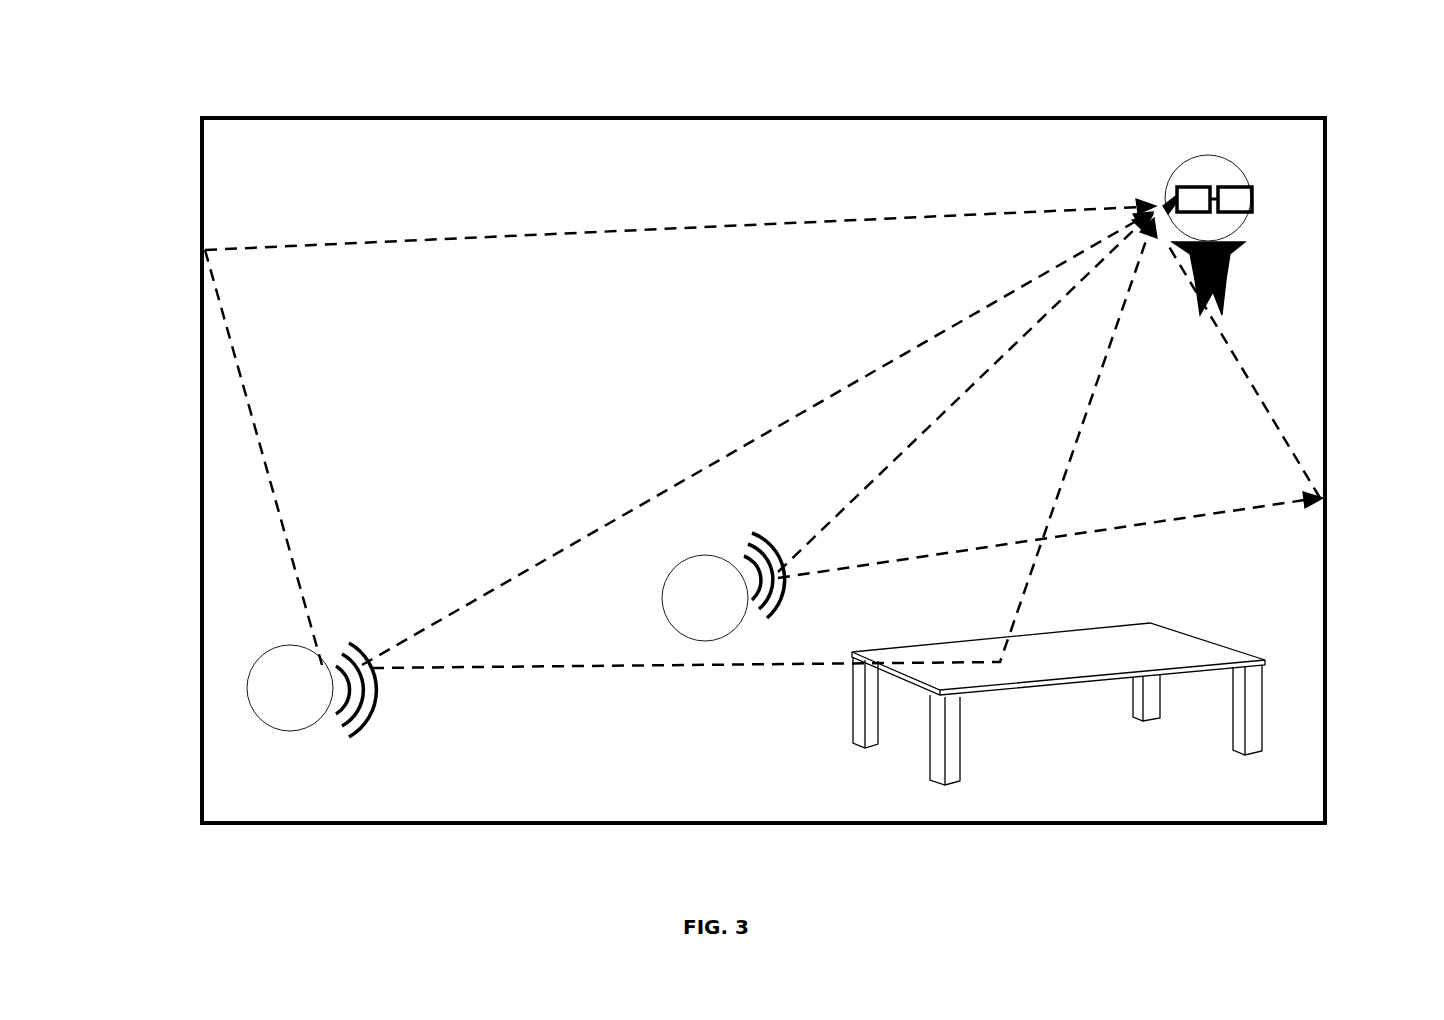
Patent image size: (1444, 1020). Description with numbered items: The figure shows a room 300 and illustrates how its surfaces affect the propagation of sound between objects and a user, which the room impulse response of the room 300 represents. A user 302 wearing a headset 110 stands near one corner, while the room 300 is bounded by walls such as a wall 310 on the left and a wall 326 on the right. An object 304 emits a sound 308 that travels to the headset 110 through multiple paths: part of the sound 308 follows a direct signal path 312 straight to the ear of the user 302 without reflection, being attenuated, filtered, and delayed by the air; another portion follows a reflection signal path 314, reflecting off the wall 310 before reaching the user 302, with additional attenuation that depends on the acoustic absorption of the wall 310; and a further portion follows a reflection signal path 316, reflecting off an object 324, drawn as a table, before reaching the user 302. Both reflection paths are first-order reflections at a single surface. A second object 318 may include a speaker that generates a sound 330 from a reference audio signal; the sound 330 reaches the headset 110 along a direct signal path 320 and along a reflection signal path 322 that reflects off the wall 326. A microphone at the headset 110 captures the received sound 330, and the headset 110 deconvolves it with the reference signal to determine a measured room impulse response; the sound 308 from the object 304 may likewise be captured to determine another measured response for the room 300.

The room 300 is at (763, 470).
The wall 310 is at (200, 235).
The wall 326 is at (1330, 705).
The reflection signal path 314 is at (680, 432).
The direct signal path 312 is at (757, 438).
The direct signal path 320 is at (953, 393).
The reflection signal path 316 is at (764, 443).
The reflection signal path 322 is at (1050, 411).
The headset 110 is at (1255, 195).
The user 302 is at (1228, 253).
The object 304 is at (257, 688).
The sound 308 is at (352, 650).
The object 318 is at (712, 592).
The sound 330 is at (717, 628).
The object 324 is at (1058, 704).